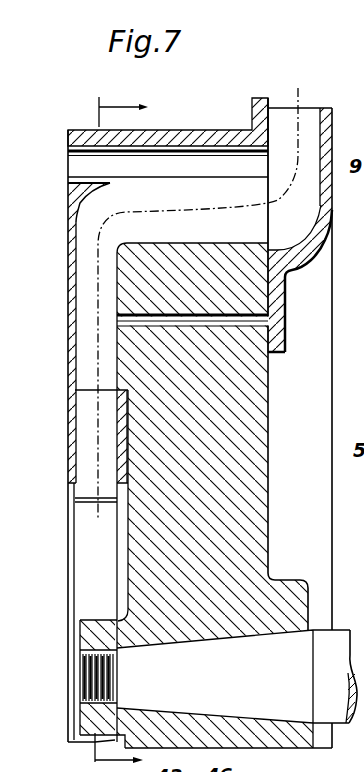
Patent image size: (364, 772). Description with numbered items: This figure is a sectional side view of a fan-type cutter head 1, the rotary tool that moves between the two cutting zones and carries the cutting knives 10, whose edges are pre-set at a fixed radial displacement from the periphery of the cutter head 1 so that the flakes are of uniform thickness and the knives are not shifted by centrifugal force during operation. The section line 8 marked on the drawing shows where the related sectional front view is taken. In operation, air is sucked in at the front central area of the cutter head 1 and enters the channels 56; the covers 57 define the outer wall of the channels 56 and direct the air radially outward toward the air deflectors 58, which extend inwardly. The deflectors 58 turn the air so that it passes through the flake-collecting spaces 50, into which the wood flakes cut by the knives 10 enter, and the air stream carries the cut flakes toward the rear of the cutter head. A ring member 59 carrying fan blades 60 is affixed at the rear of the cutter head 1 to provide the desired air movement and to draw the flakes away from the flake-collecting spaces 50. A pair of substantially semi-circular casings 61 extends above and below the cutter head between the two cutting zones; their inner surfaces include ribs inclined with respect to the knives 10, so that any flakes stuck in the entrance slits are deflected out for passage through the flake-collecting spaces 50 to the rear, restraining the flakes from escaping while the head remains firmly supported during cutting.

The cutter head 1 is at (253, 423).
The section line 8- 8 is at (180, 428).
The cutting knife 10 is at (68, 153).
The flake-collecting space 50 is at (226, 190).
The channel 56 is at (88, 370).
The cover 57 is at (70, 262).
The air deflector 58 is at (82, 185).
The ring member 59 is at (317, 247).
The fan blade 60 is at (310, 124).
The semi-circular casing 61 is at (184, 130).